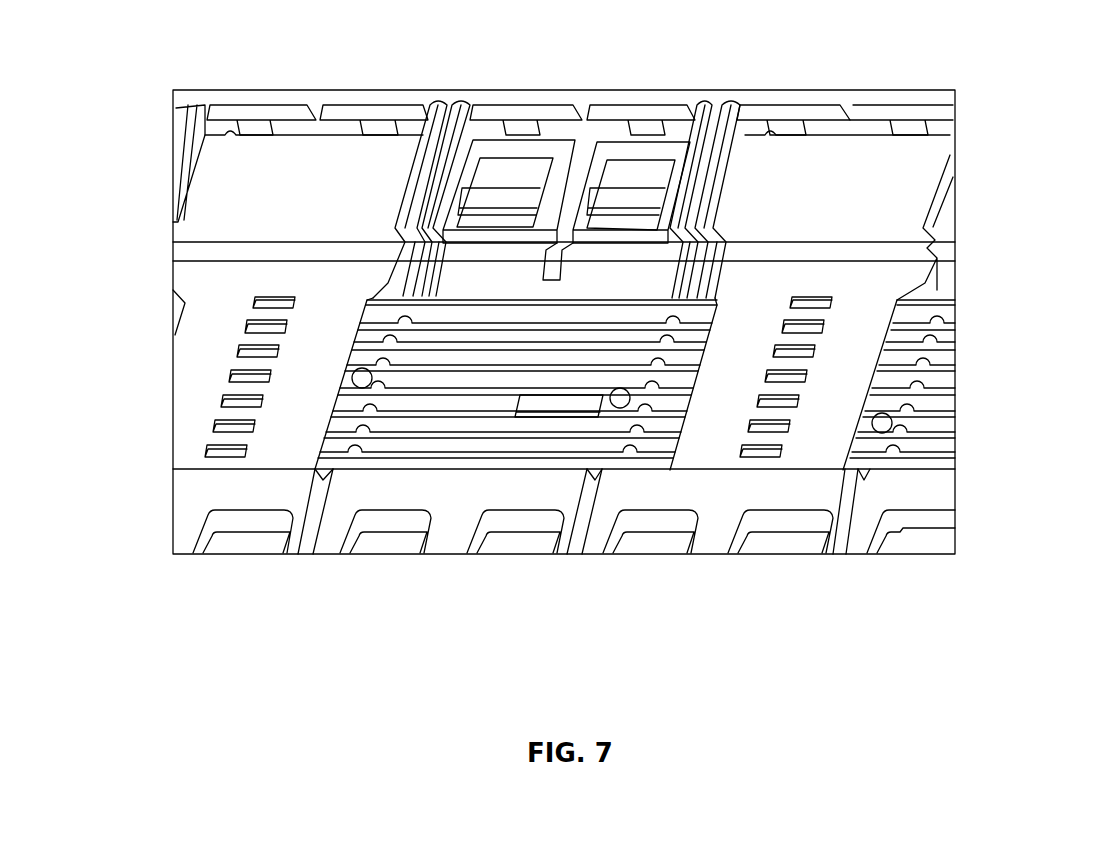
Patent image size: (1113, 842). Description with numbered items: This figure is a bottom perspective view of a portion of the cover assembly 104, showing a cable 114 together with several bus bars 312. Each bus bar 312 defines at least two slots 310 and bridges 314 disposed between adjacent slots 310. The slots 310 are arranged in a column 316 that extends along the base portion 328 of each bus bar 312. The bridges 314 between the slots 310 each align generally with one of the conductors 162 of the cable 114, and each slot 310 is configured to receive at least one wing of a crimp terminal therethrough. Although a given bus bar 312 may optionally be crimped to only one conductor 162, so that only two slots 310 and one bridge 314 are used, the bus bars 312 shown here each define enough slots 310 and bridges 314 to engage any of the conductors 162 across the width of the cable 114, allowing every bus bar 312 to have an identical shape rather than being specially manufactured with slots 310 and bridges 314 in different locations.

The cover assembly 104 is at (619, 36).
The cable 114 is at (487, 335).
The conductors 162 is at (403, 427).
The slots 310 is at (216, 416).
The bus bars 312 is at (212, 148).
The bridges 314 is at (214, 437).
The column 316 is at (213, 478).
The base portion 328 is at (192, 342).